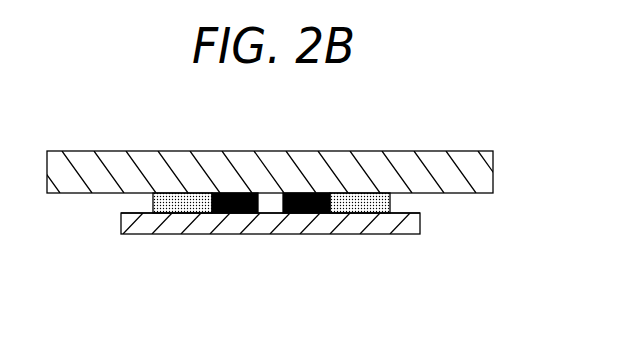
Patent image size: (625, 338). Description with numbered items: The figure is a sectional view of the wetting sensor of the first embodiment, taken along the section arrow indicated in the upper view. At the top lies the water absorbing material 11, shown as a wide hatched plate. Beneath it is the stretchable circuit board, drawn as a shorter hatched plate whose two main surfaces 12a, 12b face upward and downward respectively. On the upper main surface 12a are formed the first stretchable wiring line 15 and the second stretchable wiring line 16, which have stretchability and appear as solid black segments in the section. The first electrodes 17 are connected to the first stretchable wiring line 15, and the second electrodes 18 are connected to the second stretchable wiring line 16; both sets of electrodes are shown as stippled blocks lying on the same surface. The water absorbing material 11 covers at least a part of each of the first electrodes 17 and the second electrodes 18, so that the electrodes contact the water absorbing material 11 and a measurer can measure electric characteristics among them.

The water absorbing material 11 is at (462, 160).
The main surface 12a is at (398, 213).
The main surface 12b is at (404, 236).
The first stretchable wiring line 15 is at (236, 193).
The second stretchable wiring line 16 is at (318, 193).
The first electrodes 17 is at (177, 193).
The second electrodes 18 is at (363, 193).